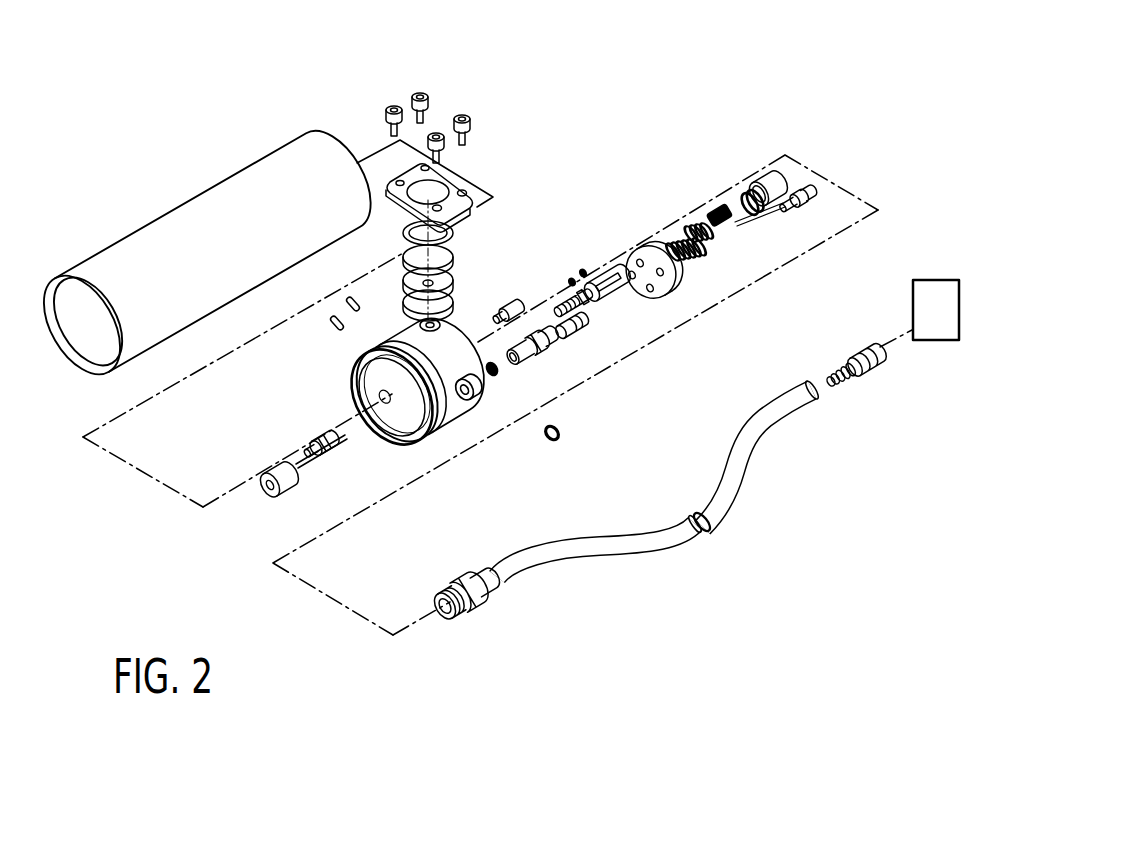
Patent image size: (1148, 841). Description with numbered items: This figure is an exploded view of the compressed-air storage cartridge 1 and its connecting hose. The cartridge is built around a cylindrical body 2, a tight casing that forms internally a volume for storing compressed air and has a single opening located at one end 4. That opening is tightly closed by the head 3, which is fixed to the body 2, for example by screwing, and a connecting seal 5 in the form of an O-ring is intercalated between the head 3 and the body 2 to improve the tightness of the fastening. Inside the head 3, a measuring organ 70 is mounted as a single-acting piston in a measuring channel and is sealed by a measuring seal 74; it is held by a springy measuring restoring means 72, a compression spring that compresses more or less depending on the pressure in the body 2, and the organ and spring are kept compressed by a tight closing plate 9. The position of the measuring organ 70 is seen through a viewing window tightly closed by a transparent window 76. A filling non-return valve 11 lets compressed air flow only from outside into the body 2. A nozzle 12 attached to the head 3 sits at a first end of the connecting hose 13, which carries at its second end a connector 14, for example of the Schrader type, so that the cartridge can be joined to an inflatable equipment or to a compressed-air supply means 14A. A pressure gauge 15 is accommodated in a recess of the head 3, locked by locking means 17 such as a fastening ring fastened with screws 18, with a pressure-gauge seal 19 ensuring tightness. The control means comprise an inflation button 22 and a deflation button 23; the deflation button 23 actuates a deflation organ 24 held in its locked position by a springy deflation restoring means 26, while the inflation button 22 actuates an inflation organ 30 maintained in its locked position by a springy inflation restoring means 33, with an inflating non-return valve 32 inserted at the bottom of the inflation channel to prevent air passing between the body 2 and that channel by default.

The compressed-air storage cartridge 1 is at (178, 130).
The body 2 is at (147, 262).
The head 3 is at (452, 425).
The end 4 is at (345, 133).
The connecting seal 5 is at (432, 428).
The closing plate 9 is at (640, 246).
The filling non-return valve 11 is at (511, 300).
The nozzle 12 is at (482, 597).
The connecting hose 13 is at (664, 548).
The connector 14 is at (855, 372).
The compressed-air supply means 14A is at (933, 330).
The pressure gauge 15 is at (440, 287).
The locking means 17 is at (455, 176).
The screws 18 is at (421, 92).
The pressure-gauge seal 19 is at (375, 343).
The inflation button 22 is at (769, 180).
The deflation button 23 is at (768, 213).
The deflation organ 24 is at (592, 302).
The springy deflation restoring means 26 is at (681, 254).
The inflation organ 30 is at (607, 272).
The inflating non-return valve 32 is at (322, 437).
The springy inflation restoring means 33 is at (690, 230).
The measuring organ 70 is at (531, 355).
The springy measuring restoring means 72 is at (575, 335).
The measuring seal 74 is at (497, 373).
The transparent window 76 is at (554, 443).